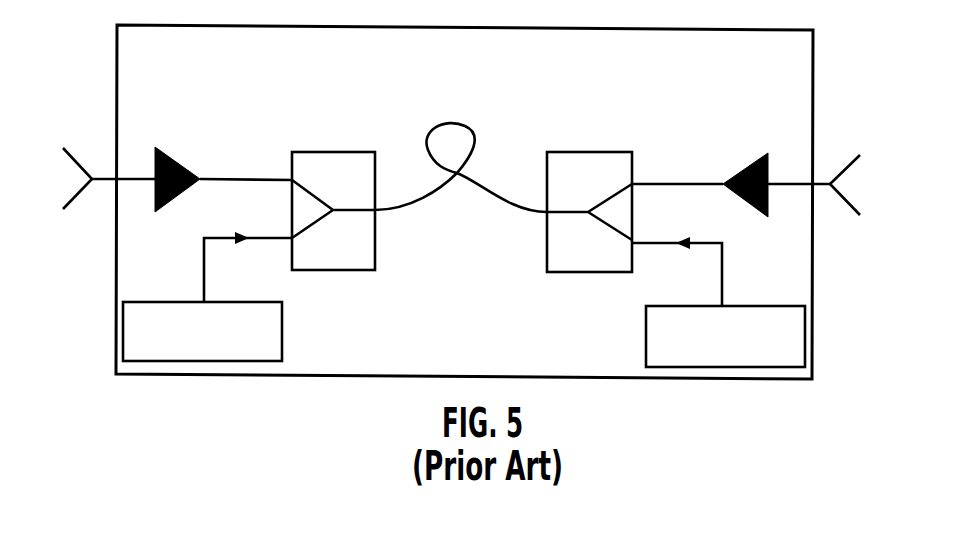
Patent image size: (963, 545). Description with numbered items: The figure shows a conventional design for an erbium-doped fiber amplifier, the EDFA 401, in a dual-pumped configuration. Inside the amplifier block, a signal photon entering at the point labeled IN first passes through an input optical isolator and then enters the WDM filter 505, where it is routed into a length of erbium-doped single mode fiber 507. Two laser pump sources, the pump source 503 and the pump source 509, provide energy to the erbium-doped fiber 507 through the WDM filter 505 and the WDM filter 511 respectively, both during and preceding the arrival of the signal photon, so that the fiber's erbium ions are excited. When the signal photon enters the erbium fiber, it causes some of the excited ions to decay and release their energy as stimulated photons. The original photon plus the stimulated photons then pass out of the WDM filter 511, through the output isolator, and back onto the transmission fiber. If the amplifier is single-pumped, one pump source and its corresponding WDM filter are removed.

The EDFA 401 is at (787, 379).
The laser pump source 503 is at (207, 298).
The WDM filter 505 is at (333, 194).
The erbium-doped single mode fiber 507 is at (473, 130).
The laser pump source 509 is at (718, 303).
The WDM filter 511 is at (589, 196).